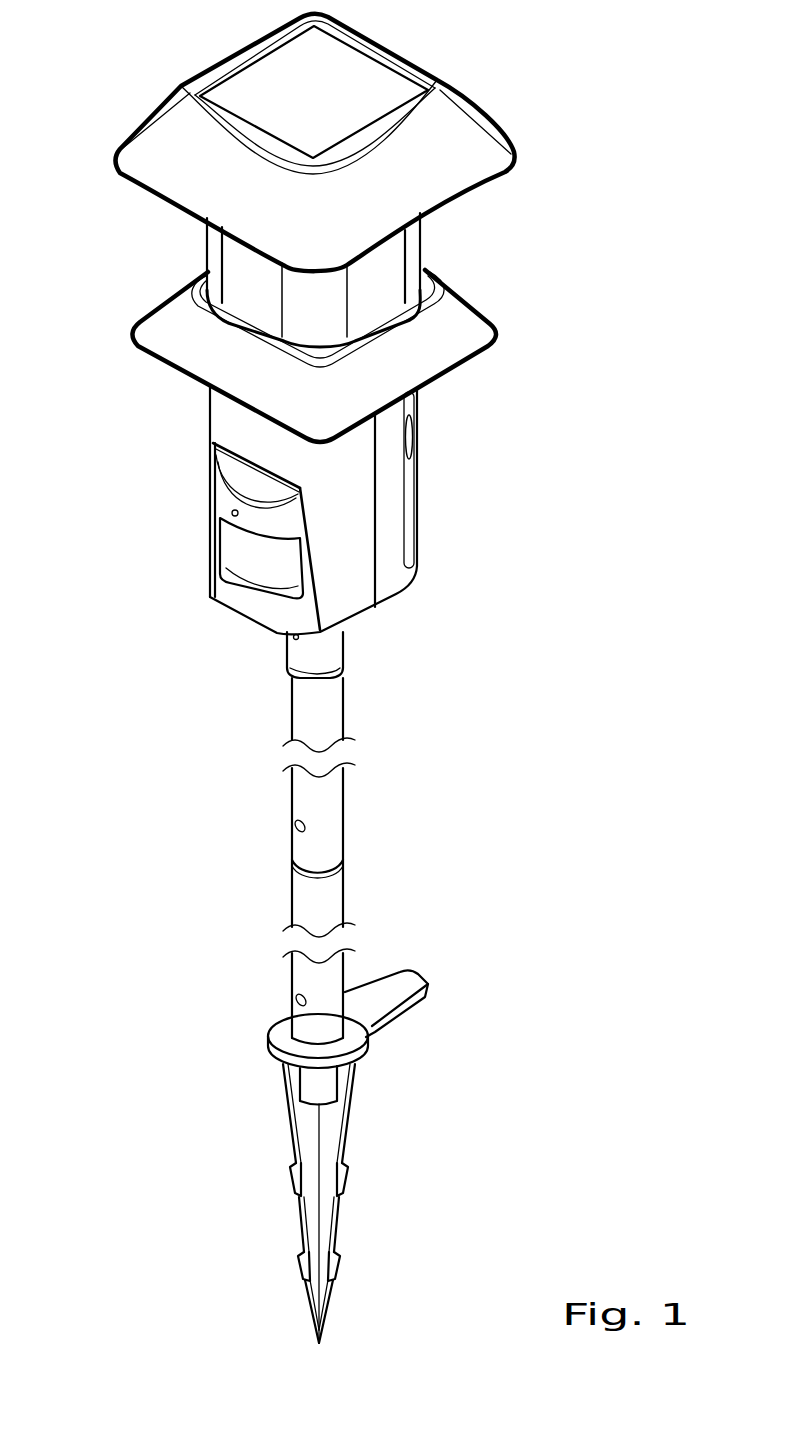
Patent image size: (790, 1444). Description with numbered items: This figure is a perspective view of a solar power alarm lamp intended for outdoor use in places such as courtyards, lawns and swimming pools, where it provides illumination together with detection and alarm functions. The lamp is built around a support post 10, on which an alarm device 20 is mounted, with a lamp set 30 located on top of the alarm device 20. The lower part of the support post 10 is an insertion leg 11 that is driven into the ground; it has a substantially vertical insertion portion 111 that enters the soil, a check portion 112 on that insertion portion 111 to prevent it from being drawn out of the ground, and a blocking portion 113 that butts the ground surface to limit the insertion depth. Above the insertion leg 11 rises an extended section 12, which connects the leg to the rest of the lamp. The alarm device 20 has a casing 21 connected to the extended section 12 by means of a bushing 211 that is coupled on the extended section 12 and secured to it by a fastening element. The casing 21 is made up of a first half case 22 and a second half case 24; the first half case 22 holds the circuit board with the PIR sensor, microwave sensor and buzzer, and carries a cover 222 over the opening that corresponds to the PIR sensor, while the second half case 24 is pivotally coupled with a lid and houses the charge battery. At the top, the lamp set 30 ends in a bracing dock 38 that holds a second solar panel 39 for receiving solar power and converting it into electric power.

The support post 10 is at (259, 1010).
The insertion leg 11 is at (259, 1156).
The insertion portion 111 is at (310, 1132).
The check portion 112 is at (246, 1222).
The blocking portion 113 is at (281, 1032).
The extended section 12 is at (333, 815).
The alarm device 20 is at (297, 497).
The casing 21 is at (315, 555).
The bushing 211 is at (300, 652).
The first half case 22 is at (358, 605).
The cover 222 is at (236, 540).
The second half case 24 is at (393, 560).
The lamp set 30 is at (340, 177).
The bracing dock 38 is at (367, 139).
The second solar panel 39 is at (406, 90).